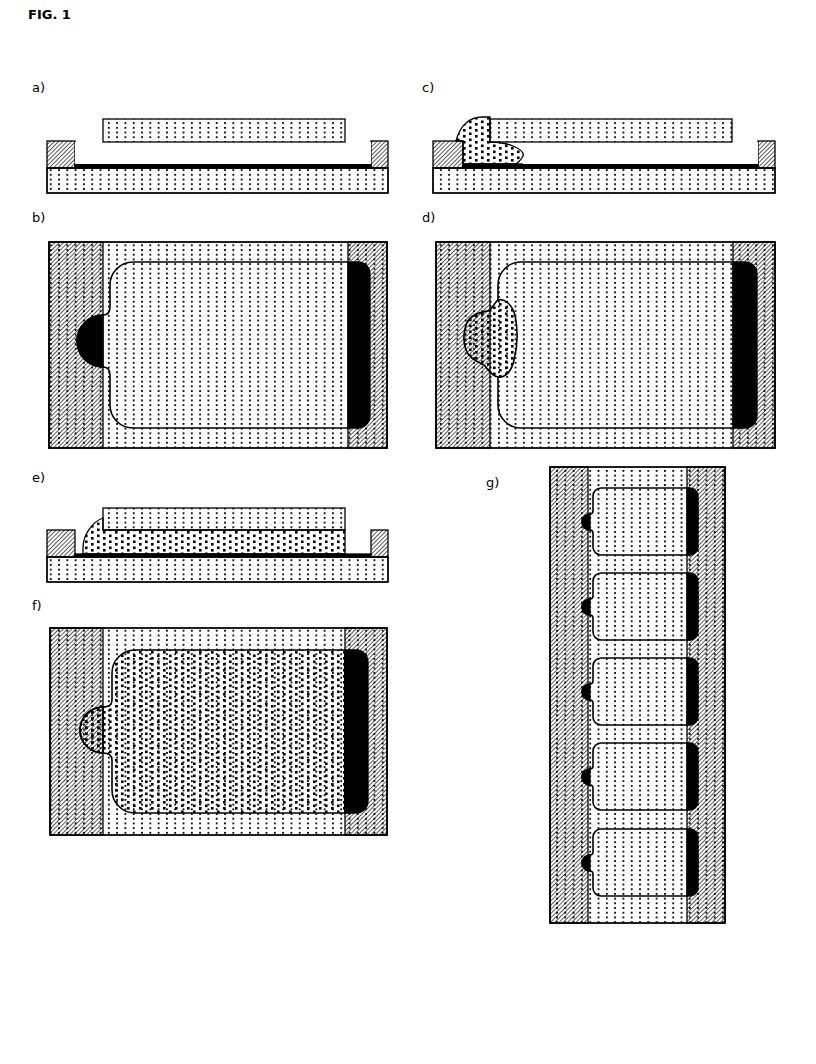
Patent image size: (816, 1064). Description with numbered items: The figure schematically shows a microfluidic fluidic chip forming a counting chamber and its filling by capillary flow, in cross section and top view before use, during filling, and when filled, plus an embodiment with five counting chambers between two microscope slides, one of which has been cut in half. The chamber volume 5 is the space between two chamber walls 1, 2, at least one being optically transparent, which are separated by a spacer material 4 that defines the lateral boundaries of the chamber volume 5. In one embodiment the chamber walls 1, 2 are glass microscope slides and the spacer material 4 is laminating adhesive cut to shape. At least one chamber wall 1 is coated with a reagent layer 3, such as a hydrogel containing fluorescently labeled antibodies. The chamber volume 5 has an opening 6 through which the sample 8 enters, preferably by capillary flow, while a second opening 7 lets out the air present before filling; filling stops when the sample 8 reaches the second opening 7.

The chamber wall 1 is at (405, 545).
The chamber wall 2 is at (187, 723).
The reagent layer 3 is at (223, 167).
The spacer material 4 is at (765, 255).
The chamber volume 5 is at (648, 237).
The opening 6 is at (98, 317).
The second opening 7 is at (345, 652).
The sample 8 is at (92, 725).